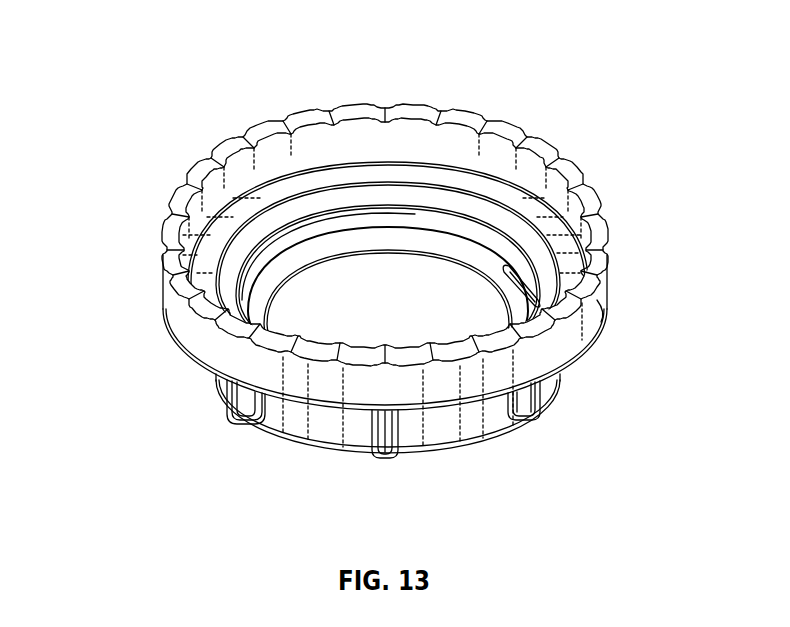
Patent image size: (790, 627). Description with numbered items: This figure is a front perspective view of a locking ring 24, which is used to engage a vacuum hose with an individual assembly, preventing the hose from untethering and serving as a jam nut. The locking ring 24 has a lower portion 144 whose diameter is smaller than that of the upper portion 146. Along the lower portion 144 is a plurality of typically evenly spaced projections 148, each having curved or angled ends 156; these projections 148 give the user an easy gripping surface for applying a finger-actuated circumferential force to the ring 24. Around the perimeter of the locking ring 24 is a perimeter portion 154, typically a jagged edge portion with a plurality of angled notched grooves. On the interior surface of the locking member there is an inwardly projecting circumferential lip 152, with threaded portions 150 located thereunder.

The locking ring 24 is at (133, 59).
The lower portion 144 is at (435, 432).
The upper portion 146 is at (602, 273).
The projections 148 is at (227, 414).
The threaded portions 150 is at (450, 232).
The inwardly projecting circumferential lip 152 is at (428, 176).
The perimeter portion 154 is at (556, 146).
The curved or angled ends 156 is at (524, 428).